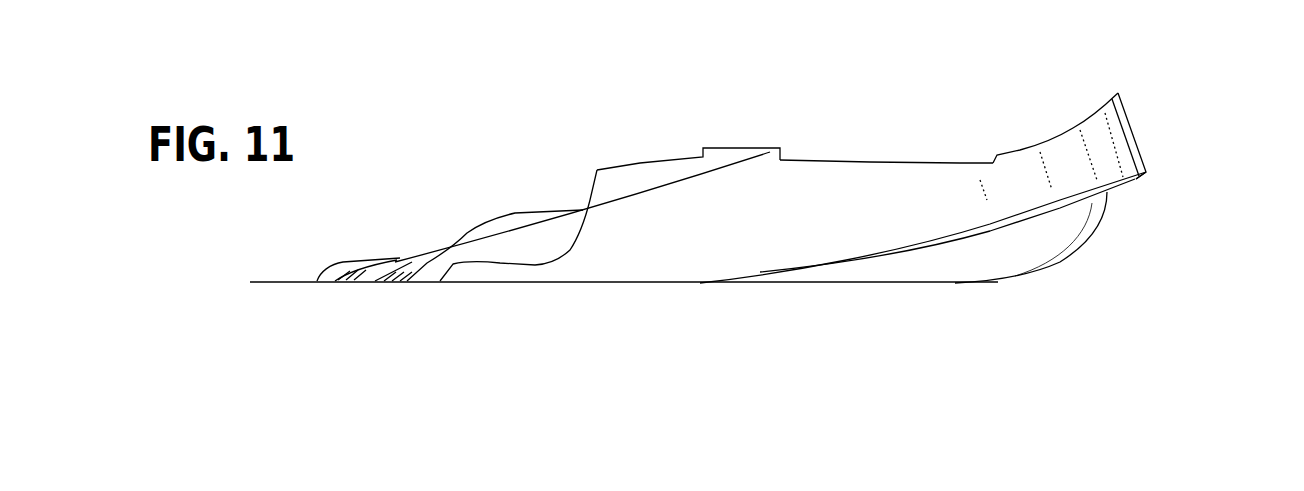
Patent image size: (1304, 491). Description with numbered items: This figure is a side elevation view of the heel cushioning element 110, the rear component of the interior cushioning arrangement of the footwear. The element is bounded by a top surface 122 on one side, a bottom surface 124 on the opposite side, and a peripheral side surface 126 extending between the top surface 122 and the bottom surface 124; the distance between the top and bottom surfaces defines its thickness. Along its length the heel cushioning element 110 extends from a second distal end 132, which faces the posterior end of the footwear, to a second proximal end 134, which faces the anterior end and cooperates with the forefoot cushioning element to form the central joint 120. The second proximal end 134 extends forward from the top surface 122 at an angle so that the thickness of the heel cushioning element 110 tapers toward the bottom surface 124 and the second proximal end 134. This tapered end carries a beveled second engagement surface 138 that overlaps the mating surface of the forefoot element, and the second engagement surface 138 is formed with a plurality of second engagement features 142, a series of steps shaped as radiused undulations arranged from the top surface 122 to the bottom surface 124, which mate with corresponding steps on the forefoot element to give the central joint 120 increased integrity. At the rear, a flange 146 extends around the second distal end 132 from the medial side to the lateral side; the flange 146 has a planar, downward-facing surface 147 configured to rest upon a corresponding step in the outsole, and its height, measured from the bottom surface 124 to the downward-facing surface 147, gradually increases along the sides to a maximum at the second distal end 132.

The heel cushioning element 110 is at (1178, 70).
The central joint 120 is at (652, 190).
The top surface 122 is at (820, 160).
The bottom surface 124 is at (897, 283).
The peripheral side surface 126 is at (893, 187).
The second distal end 132 is at (1133, 132).
The second proximal end 134 is at (312, 280).
The second engagement surface 138 is at (497, 227).
The second engagement features 142 is at (367, 267).
The flange 146 is at (1143, 158).
The downward-facing surface 147 is at (1127, 187).